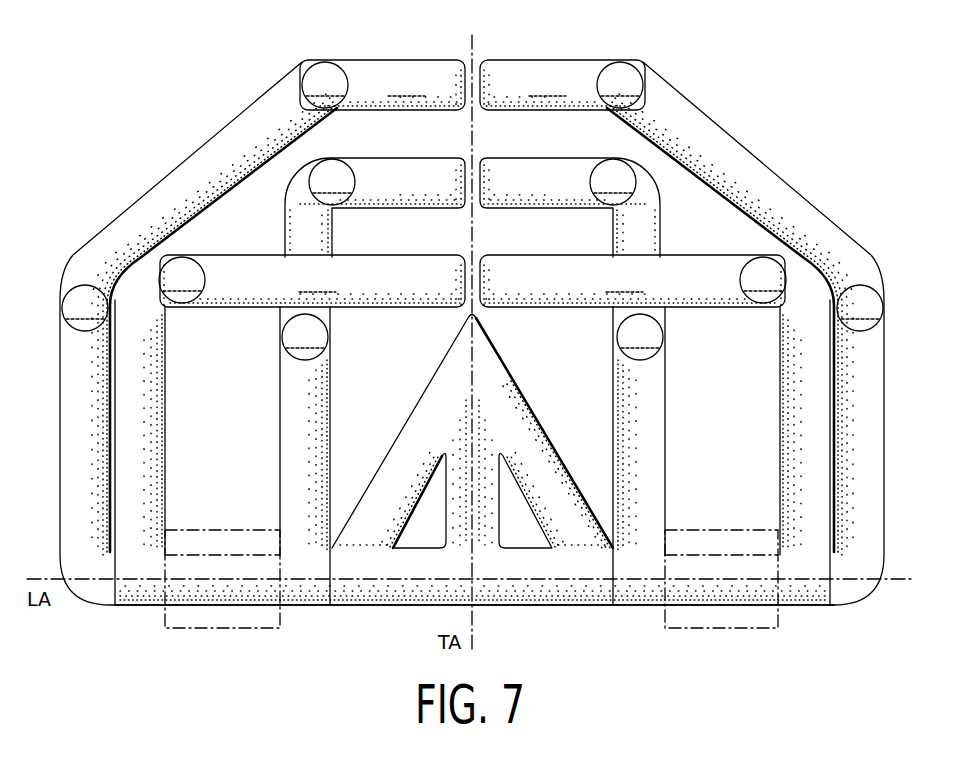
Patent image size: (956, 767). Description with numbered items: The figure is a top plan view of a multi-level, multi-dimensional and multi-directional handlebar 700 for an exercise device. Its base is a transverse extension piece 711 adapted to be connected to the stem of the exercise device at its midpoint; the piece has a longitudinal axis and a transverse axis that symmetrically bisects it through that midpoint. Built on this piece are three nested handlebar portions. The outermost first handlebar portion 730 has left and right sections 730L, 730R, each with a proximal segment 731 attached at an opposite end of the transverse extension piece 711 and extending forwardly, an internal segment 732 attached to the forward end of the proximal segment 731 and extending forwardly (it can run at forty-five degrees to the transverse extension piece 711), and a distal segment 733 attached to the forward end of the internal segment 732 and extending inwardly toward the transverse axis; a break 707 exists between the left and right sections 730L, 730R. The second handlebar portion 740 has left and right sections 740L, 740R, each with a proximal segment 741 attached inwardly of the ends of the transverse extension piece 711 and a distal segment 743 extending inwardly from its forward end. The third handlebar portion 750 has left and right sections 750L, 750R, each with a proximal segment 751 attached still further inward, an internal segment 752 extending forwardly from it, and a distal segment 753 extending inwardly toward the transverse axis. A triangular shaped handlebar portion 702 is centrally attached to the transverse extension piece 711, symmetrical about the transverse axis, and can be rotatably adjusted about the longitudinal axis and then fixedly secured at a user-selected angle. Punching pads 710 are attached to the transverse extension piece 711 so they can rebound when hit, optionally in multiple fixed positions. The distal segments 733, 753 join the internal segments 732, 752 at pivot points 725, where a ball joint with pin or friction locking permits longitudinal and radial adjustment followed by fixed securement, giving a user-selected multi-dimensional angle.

The handlebar 700 is at (367, 643).
The triangular shaped handlebar portion 702 is at (555, 447).
The break 707 is at (480, 52).
The punching pad 710 is at (205, 630).
The transverse extension piece 711 is at (638, 605).
The pivot points 725 is at (472, 211).
The first handlebar portion 730 is at (481, 303).
The left section of the first handlebar portion 730L is at (370, 58).
The right section of the first handlebar portion 730R is at (590, 58).
The proximal segment 731 is at (72, 457).
The internal segment 732 is at (192, 173).
The distal segment 733 is at (472, 85).
The second handlebar portion 740 is at (472, 430).
The left section of the second handlebar portion 740L is at (358, 307).
The right section of the second handlebar portion 740R is at (540, 307).
The proximal segment 741 is at (165, 444).
The distal segment 743 is at (472, 281).
The third handlebar portion 750 is at (494, 175).
The left section of the third handlebar portion 750L is at (415, 158).
The right section of the third handlebar portion 750R is at (580, 130).
The proximal segment 751 is at (280, 486).
The internal segment 752 is at (288, 228).
The distal segment 753 is at (395, 208).